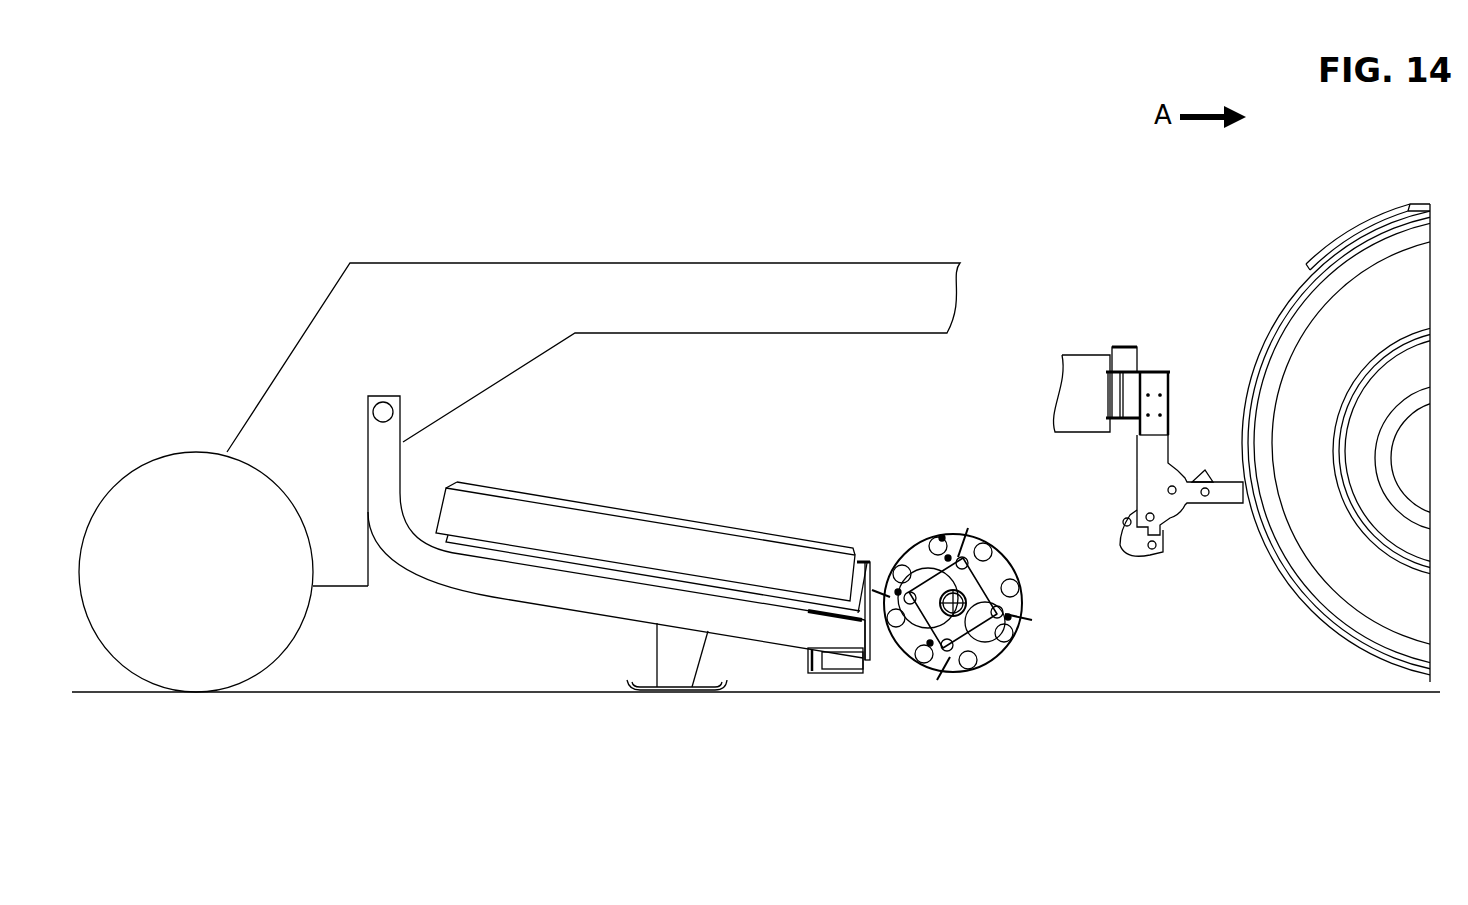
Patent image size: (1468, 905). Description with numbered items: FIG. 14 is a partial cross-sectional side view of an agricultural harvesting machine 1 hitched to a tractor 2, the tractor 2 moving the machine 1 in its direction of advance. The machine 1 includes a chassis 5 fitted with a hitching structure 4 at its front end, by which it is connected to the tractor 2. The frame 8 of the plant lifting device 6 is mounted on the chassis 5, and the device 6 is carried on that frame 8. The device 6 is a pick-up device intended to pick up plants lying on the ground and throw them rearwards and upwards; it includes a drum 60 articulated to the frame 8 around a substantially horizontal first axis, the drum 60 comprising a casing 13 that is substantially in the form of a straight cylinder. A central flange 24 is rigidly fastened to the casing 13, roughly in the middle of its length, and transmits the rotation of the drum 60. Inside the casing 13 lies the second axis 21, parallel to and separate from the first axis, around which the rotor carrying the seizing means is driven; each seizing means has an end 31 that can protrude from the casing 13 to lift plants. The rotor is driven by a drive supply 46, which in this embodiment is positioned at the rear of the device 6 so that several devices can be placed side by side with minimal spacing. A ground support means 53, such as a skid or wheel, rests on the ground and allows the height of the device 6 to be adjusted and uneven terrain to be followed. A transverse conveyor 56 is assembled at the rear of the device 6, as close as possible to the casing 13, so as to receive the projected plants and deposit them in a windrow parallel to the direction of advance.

The agricultural machine 1 is at (443, 787).
The tractor 2 is at (1363, 737).
The hitching structure 4 is at (1188, 565).
The chassis 5 is at (668, 341).
The plant lifting device 6 is at (732, 620).
The frame 8 is at (582, 593).
The casing 13 is at (984, 609).
The second axis 21 is at (957, 612).
The central flange 24 is at (1010, 626).
The end 31 is at (968, 530).
The drive supply 46 is at (820, 663).
The ground support means 53 is at (686, 703).
The transverse conveyor 56 is at (657, 512).
The drum 60 is at (1012, 578).